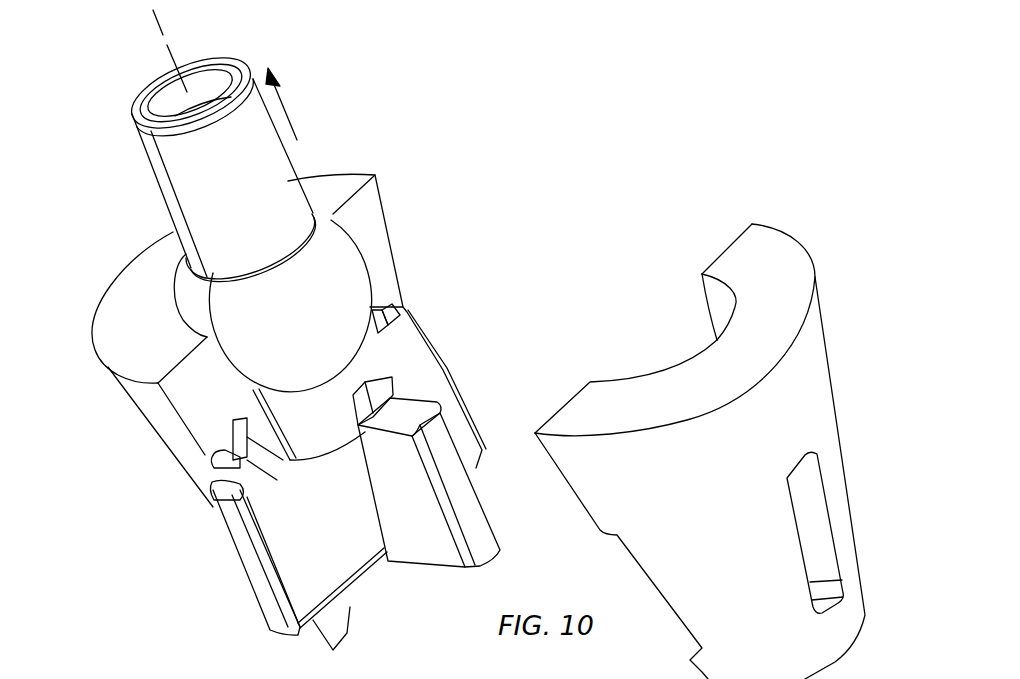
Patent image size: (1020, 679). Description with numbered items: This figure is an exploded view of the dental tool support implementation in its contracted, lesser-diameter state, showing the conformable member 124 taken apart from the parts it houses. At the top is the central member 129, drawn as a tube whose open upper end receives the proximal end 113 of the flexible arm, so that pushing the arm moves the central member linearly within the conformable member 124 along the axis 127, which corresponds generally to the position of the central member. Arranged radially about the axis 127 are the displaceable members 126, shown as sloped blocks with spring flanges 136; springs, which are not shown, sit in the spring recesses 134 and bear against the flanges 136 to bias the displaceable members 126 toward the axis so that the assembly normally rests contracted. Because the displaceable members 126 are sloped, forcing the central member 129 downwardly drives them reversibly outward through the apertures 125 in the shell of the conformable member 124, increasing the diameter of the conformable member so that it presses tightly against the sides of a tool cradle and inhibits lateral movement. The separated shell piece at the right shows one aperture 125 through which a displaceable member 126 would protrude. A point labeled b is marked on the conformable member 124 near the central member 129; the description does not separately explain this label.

The proximal end of the flexible arm 113 is at (212, 62).
The conformable member 124 is at (362, 166).
The aperture 125 is at (823, 503).
The displaceable member 126 is at (458, 413).
The axis 127 is at (154, 24).
The central member 129 is at (166, 190).
The spring recess 134 is at (403, 308).
The spring flange 136 is at (432, 343).
The point b is at (378, 238).